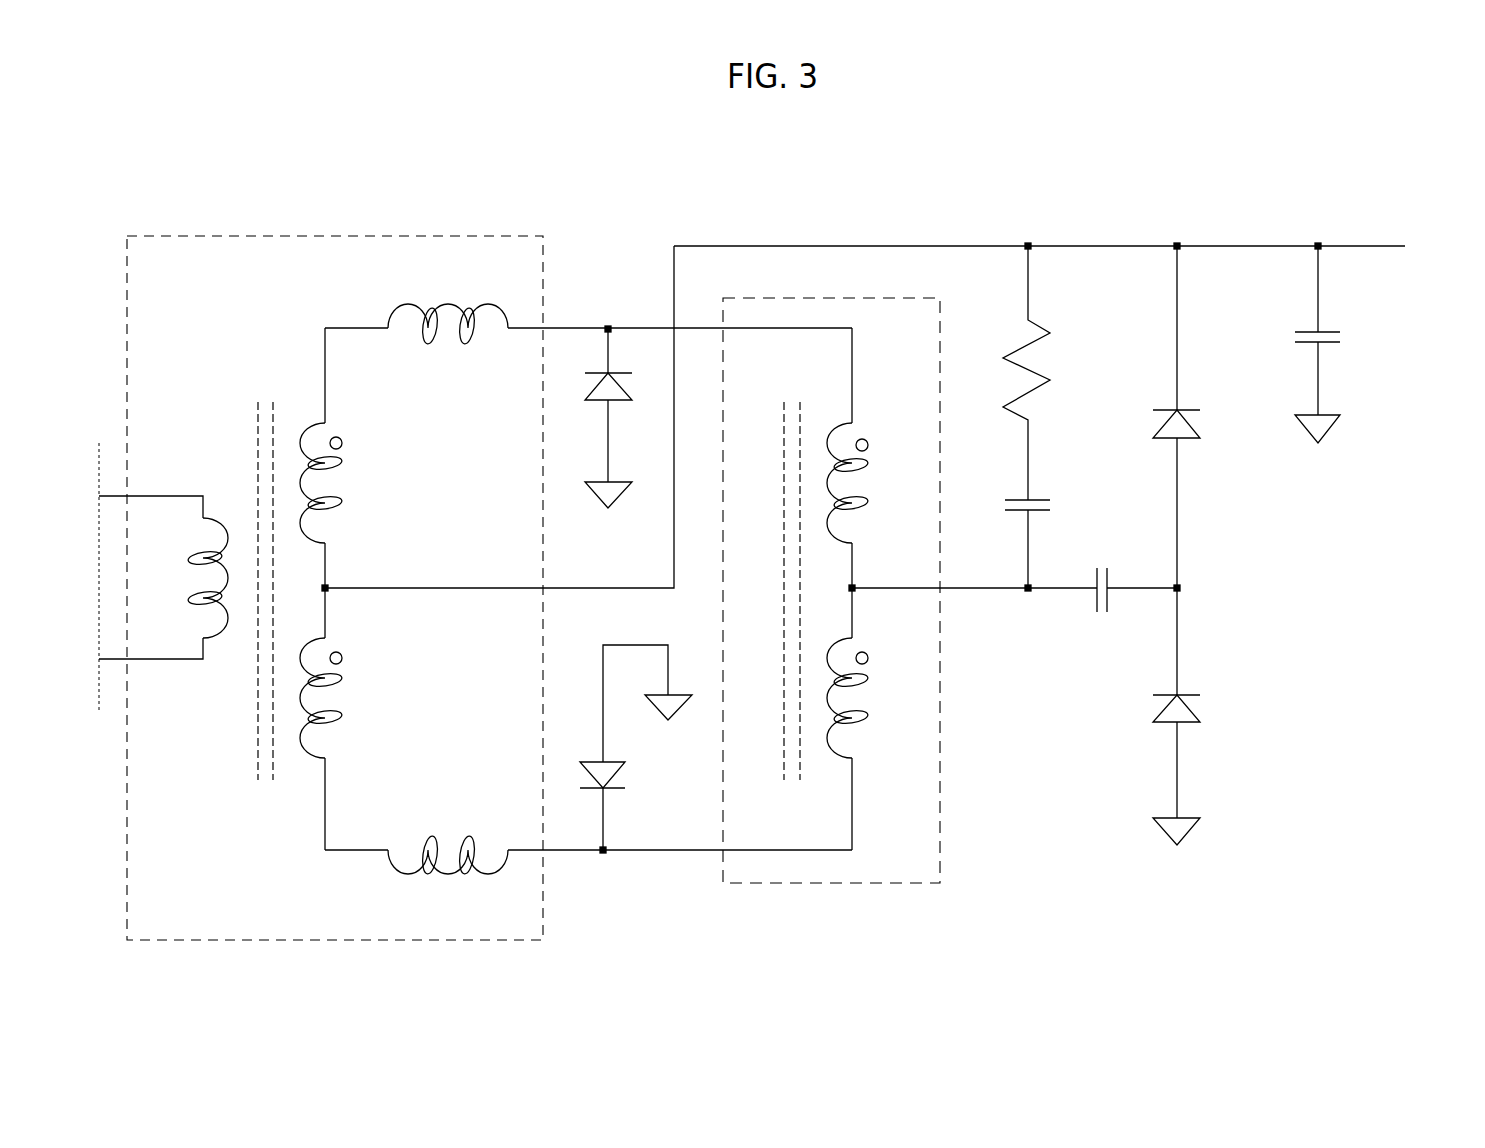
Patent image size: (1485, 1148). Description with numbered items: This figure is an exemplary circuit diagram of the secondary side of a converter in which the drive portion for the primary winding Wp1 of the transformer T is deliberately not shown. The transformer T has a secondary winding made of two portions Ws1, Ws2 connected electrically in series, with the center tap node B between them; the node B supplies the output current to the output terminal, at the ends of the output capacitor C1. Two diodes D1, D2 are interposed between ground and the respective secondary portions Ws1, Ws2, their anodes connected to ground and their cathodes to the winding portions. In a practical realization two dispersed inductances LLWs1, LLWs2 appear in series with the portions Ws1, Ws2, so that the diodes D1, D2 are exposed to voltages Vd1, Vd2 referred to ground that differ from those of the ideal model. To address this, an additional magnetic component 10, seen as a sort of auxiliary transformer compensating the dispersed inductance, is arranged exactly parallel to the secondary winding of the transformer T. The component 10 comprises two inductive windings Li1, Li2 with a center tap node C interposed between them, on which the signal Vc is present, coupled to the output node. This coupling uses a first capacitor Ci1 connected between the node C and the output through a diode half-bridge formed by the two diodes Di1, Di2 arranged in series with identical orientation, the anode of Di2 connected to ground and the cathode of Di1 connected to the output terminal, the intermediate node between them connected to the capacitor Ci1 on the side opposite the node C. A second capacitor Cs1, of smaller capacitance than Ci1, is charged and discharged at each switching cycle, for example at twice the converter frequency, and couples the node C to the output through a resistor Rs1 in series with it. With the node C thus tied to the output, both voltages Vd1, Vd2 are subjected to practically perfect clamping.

The additional magnetic component 10 is at (913, 290).
The transformer T is at (190, 478).
The primary winding Wp1 is at (192, 588).
The first portion of the secondary winding Ws1 is at (340, 493).
The second portion of the secondary winding Ws2 is at (307, 718).
The dispersed inductance LLWs1 is at (448, 302).
The dispersed inductance LLWs2 is at (428, 880).
The center tap node B is at (333, 586).
The voltage at diode D1 Vd1 is at (635, 318).
The diode D1 is at (595, 387).
The voltage at diode D2 Vd2 is at (641, 839).
The diode D2 is at (620, 763).
The inductive winding Li1 is at (848, 492).
The inductive winding Li2 is at (847, 730).
The center tap node C is at (863, 578).
The signal on node C Vc is at (999, 575).
The resistor Rs1 is at (1040, 368).
The second capacitor Cs1 is at (1035, 500).
The first capacitor Ci1 is at (1090, 603).
The clamping diode Di1 is at (1187, 443).
The clamping diode Di2 is at (1198, 705).
The output capacitor C1 is at (1340, 348).